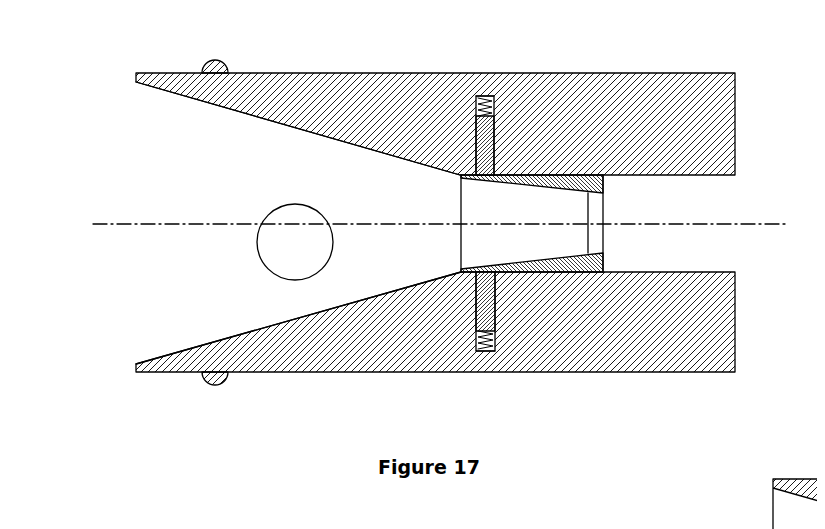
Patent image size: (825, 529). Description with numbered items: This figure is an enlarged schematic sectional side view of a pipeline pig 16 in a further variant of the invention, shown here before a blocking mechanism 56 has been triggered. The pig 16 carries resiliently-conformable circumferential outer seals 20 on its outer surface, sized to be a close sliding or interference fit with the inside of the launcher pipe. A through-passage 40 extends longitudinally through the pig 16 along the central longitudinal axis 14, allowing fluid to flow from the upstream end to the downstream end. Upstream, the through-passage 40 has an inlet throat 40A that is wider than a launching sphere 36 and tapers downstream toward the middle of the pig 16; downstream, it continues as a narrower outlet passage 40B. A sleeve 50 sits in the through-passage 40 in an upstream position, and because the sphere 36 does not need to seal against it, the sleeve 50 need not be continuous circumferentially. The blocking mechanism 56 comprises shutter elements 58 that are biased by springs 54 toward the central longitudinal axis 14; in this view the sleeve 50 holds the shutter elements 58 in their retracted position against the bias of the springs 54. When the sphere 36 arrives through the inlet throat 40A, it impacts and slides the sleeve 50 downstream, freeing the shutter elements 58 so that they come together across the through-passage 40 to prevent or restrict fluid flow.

The central longitudinal axis 14 is at (752, 218).
The pig 16 is at (462, 204).
The circumferential outer seals 20 is at (208, 381).
The sphere 36 is at (270, 242).
The through-passage 40 is at (442, 223).
The inlet throat 40A is at (162, 306).
The outlet passage 40B is at (707, 192).
The sleeve 50 is at (509, 210).
The springs 54 is at (478, 92).
The blocking mechanism 56 is at (431, 110).
The shutter elements 58 is at (473, 142).